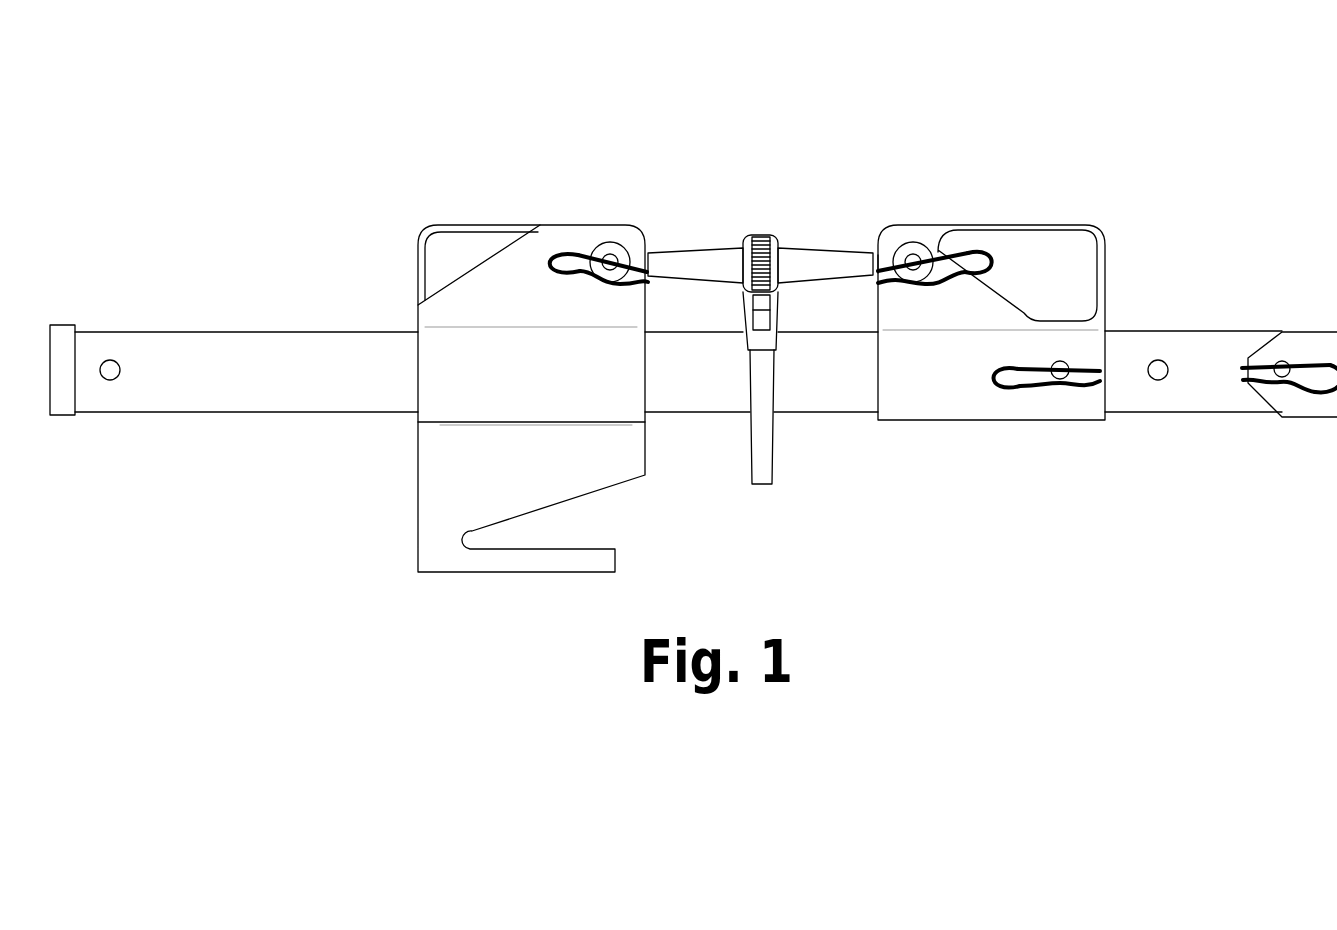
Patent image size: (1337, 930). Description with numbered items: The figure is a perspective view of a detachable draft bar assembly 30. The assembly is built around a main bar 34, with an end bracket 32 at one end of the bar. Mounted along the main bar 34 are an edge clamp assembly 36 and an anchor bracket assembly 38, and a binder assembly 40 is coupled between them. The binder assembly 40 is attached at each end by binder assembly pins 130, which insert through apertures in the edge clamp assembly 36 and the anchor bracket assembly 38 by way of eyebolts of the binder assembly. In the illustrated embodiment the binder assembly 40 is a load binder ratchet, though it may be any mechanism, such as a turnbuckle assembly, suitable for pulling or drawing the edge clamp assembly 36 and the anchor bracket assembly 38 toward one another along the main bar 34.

The draft bar assembly 30 is at (1025, 122).
The end bracket 32 is at (1284, 358).
The main bar 34 is at (187, 331).
The edge clamp assembly 36 is at (467, 228).
The anchor bracket assembly 38 is at (1063, 228).
The binder assembly 40 is at (813, 260).
The binder assembly pins 130 is at (612, 242).